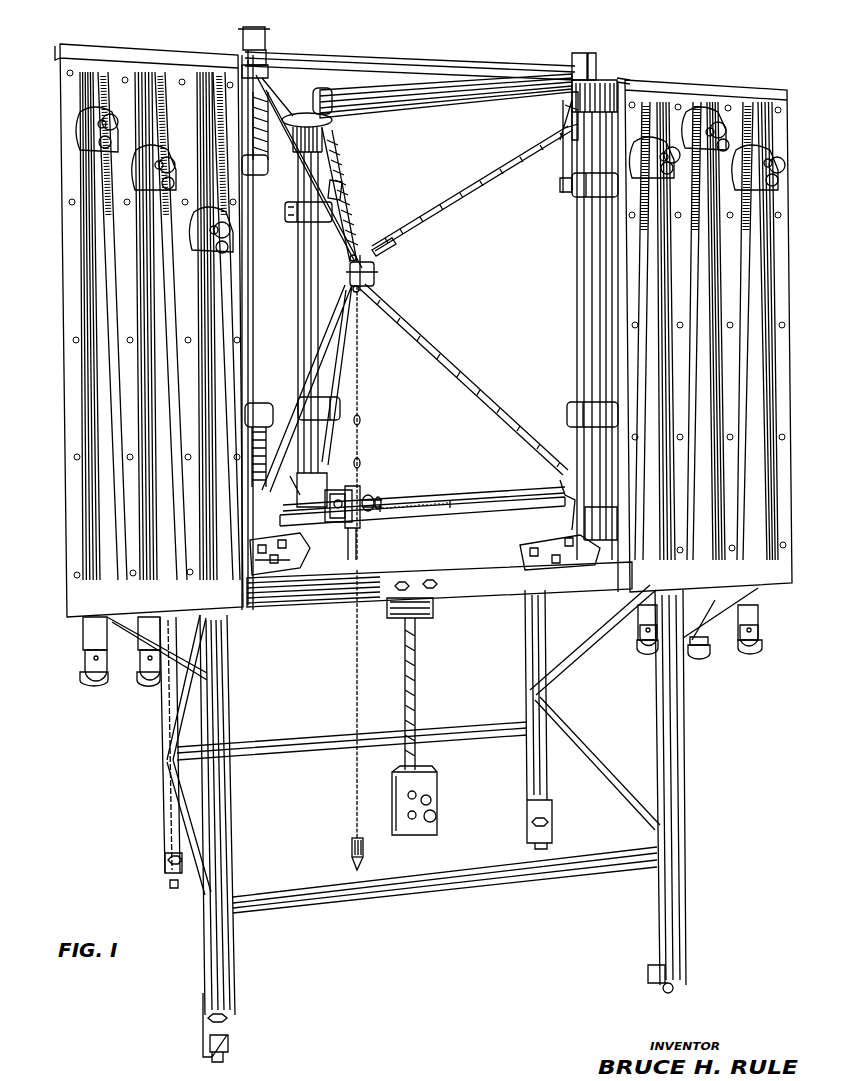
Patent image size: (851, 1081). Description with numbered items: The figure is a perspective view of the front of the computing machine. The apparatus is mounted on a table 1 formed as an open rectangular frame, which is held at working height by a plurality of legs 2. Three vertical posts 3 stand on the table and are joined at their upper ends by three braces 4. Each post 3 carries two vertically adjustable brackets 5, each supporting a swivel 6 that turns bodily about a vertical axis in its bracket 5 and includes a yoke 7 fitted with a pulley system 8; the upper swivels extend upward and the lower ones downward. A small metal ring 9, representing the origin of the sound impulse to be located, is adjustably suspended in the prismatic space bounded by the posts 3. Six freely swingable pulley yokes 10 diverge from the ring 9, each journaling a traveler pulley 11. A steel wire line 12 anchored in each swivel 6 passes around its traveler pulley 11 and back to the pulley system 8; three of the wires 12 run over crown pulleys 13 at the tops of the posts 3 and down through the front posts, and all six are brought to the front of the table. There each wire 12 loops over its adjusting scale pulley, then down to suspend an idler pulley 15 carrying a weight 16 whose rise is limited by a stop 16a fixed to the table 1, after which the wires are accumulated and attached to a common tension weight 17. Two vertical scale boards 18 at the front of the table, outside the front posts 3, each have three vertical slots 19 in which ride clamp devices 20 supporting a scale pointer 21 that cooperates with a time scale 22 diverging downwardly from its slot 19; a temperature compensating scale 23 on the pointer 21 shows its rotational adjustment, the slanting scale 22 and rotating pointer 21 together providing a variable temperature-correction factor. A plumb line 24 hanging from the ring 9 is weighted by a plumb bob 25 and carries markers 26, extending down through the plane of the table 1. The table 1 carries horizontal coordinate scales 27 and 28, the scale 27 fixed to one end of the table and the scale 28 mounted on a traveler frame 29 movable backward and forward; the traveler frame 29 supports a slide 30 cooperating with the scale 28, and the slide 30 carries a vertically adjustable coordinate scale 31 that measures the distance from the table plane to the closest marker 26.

The table 1 is at (470, 593).
The legs 2 is at (210, 823).
The vertical posts 3 is at (300, 288).
The braces 4 is at (348, 66).
The vertically adjustable brackets 5 is at (312, 208).
The swivel 6 is at (340, 190).
The yoke 7 is at (340, 167).
The pulley system 8 is at (336, 156).
The metal ring 9 is at (371, 273).
The pulley yokes 10 is at (352, 256).
The traveler pulley 11 is at (335, 292).
The steel wire line 12 is at (365, 227).
The crown pulleys 13 is at (265, 40).
The idler pulley 15 is at (87, 683).
The weight 16 is at (145, 678).
The stop 16a is at (92, 628).
The common tension weight 17 is at (432, 790).
The vertical scale boards 18 is at (72, 96).
The vertical slots 19 is at (78, 88).
The clamp device 20 is at (112, 142).
The scale pointer 21 is at (158, 156).
The time scale 22 is at (220, 80).
The temperature compensating scale 23 is at (78, 128).
The plumb line 24 is at (360, 388).
The plumb bob 25 is at (366, 852).
The markers 26 is at (361, 460).
The horizontal coordinate scale 27 is at (555, 482).
The horizontal coordinate scale 28 is at (432, 504).
The traveler frame 29 is at (481, 502).
The slide 30 is at (350, 492).
The vertical coordinate scale 31 is at (382, 498).